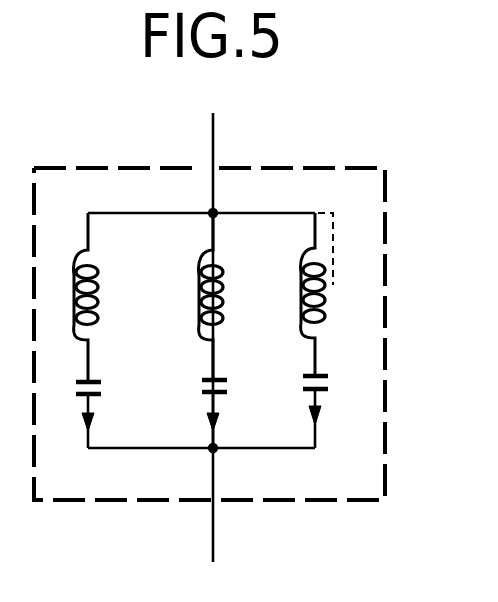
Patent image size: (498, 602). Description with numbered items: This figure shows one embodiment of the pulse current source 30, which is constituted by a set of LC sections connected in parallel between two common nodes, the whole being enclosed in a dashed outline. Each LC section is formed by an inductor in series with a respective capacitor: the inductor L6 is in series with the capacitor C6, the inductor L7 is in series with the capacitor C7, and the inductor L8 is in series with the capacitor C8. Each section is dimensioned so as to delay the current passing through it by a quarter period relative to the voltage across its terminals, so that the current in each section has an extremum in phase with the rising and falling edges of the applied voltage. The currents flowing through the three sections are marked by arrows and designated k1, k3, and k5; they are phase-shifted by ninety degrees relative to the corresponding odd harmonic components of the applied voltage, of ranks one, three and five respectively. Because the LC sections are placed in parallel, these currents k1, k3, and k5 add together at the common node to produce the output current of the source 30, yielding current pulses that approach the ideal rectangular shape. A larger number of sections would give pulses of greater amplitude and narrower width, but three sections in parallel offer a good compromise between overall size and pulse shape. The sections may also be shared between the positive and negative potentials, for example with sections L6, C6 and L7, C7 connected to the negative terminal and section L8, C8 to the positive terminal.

The pulse current source 30 is at (330, 165).
The inductor L6 is at (99, 268).
The inductor L7 is at (220, 268).
The inductor L8 is at (318, 268).
The capacitor C6 is at (102, 378).
The capacitor C7 is at (222, 378).
The capacitor C8 is at (327, 373).
The current k1 is at (108, 422).
The current k3 is at (233, 422).
The current k5 is at (334, 417).